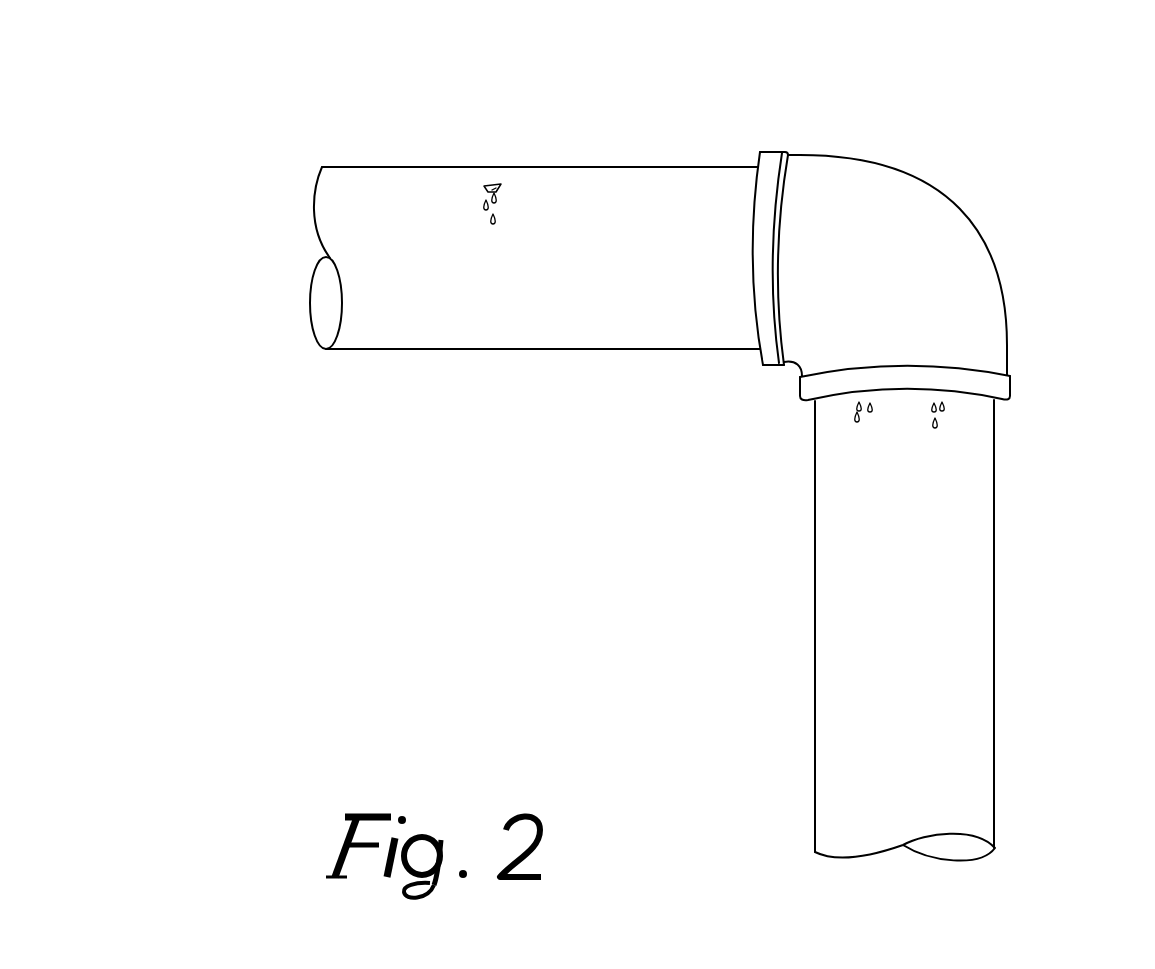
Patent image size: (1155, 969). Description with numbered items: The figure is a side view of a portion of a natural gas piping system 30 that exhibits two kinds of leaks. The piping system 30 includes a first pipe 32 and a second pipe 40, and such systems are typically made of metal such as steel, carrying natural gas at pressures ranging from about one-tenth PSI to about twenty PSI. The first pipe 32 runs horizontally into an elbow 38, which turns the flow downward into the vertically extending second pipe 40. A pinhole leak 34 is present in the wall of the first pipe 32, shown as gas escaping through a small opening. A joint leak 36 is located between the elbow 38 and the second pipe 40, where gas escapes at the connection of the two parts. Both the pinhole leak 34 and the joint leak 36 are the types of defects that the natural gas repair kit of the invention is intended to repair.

The natural gas piping system 30 is at (1045, 73).
The first pipe 32 is at (667, 172).
The pinhole leak 34 is at (490, 176).
The joint leak 36 is at (840, 437).
The elbow 38 is at (970, 237).
The second pipe 40 is at (983, 588).